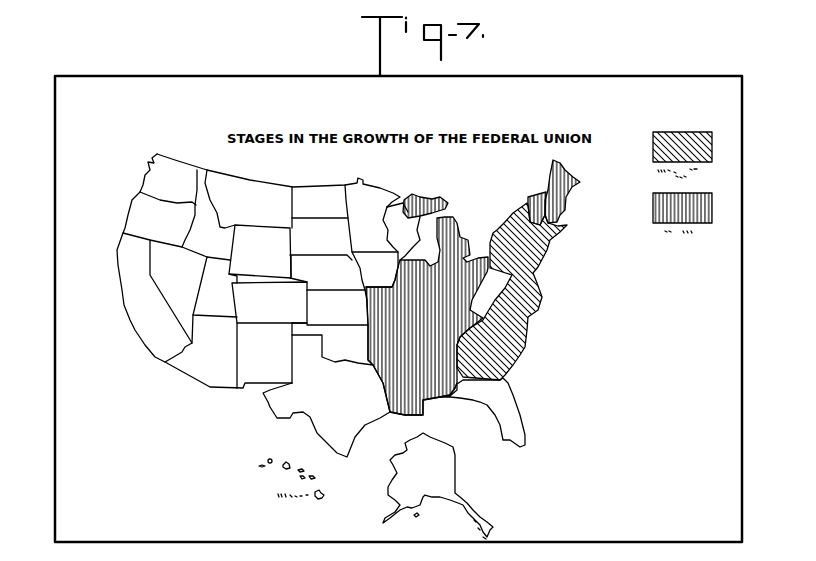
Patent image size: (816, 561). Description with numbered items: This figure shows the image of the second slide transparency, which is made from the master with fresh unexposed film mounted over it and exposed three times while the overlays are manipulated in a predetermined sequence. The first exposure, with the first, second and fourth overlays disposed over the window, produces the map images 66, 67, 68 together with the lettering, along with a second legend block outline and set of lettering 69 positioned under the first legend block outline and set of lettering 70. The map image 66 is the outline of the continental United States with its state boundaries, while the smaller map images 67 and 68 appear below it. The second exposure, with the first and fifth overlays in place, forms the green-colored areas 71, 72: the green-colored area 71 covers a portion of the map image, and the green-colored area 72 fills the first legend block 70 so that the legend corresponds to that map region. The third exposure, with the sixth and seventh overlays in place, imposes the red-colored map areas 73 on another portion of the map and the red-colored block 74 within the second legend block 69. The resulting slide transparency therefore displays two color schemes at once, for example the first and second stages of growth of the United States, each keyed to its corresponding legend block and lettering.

The map image 66 is at (313, 186).
The map image 67 is at (458, 487).
The map image 68 is at (283, 470).
The second legend block outline and set of lettering 69 is at (712, 207).
The first legend block outline and set of lettering 70 is at (712, 143).
The green-colored area of the map image 71 is at (520, 307).
The green-colored area of the first legend block 72 is at (705, 117).
The red-colored map areas 73 is at (507, 382).
The red-colored block 74 is at (680, 227).